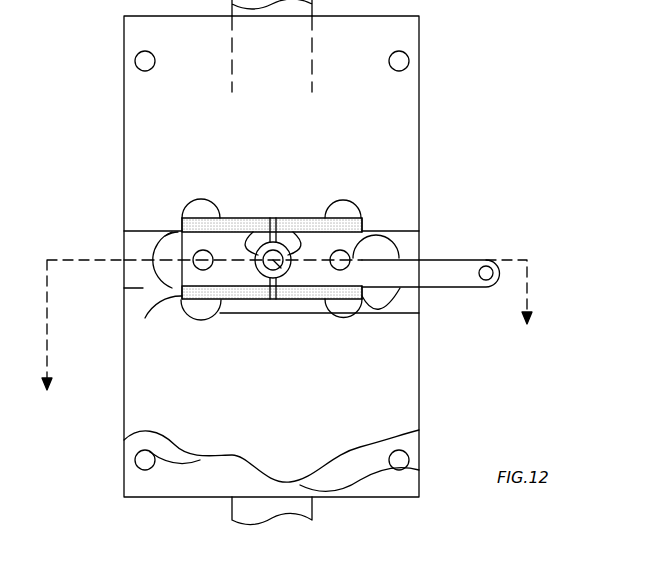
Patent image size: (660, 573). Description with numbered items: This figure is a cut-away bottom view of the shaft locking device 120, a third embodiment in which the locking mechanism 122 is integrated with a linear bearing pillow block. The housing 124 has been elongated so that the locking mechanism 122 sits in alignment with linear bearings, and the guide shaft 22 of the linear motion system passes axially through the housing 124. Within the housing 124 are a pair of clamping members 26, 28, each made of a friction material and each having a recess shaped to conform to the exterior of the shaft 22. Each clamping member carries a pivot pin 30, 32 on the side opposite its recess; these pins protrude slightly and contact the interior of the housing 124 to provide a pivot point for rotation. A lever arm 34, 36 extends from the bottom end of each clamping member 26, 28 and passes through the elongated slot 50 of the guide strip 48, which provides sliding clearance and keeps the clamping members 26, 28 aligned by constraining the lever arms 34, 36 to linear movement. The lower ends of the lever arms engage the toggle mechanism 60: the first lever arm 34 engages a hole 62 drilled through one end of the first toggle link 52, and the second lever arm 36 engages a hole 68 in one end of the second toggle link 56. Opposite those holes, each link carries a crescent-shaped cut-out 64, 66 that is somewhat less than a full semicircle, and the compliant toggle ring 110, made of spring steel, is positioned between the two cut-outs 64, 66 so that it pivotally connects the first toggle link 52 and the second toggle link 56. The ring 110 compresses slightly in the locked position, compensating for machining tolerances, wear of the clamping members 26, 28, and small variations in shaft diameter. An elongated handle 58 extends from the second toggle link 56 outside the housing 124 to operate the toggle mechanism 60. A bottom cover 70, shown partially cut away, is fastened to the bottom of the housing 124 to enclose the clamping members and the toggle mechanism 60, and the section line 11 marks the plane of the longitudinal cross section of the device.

The section line 11- 11 is at (287, 341).
The guide shaft 22 is at (320, 5).
The first clamping member 26 is at (242, 225).
The second clamping member 28 is at (317, 228).
The pivot pin 30 is at (143, 288).
The pivot pin 32 is at (380, 293).
The first lever arm 34 is at (170, 235).
The second lever arm 36 is at (366, 238).
The guide strip 48 is at (173, 268).
The elongated slot 50 is at (272, 262).
The first toggle link 52 is at (232, 303).
The second toggle link 56 is at (322, 273).
The elongated handle 58 is at (465, 272).
The toggle mechanism 60 is at (140, 250).
The hole 62 is at (202, 257).
The crescent-shaped cut-out 64 is at (250, 232).
The crescent-shaped cut-out 66 is at (298, 230).
The hole 68 is at (335, 252).
The bottom cover 70 is at (305, 458).
The compliant toggle ring 110 is at (277, 268).
The shaft locking device 120 is at (432, 84).
The locking mechanism 122 is at (440, 236).
The housing 124 is at (392, 108).